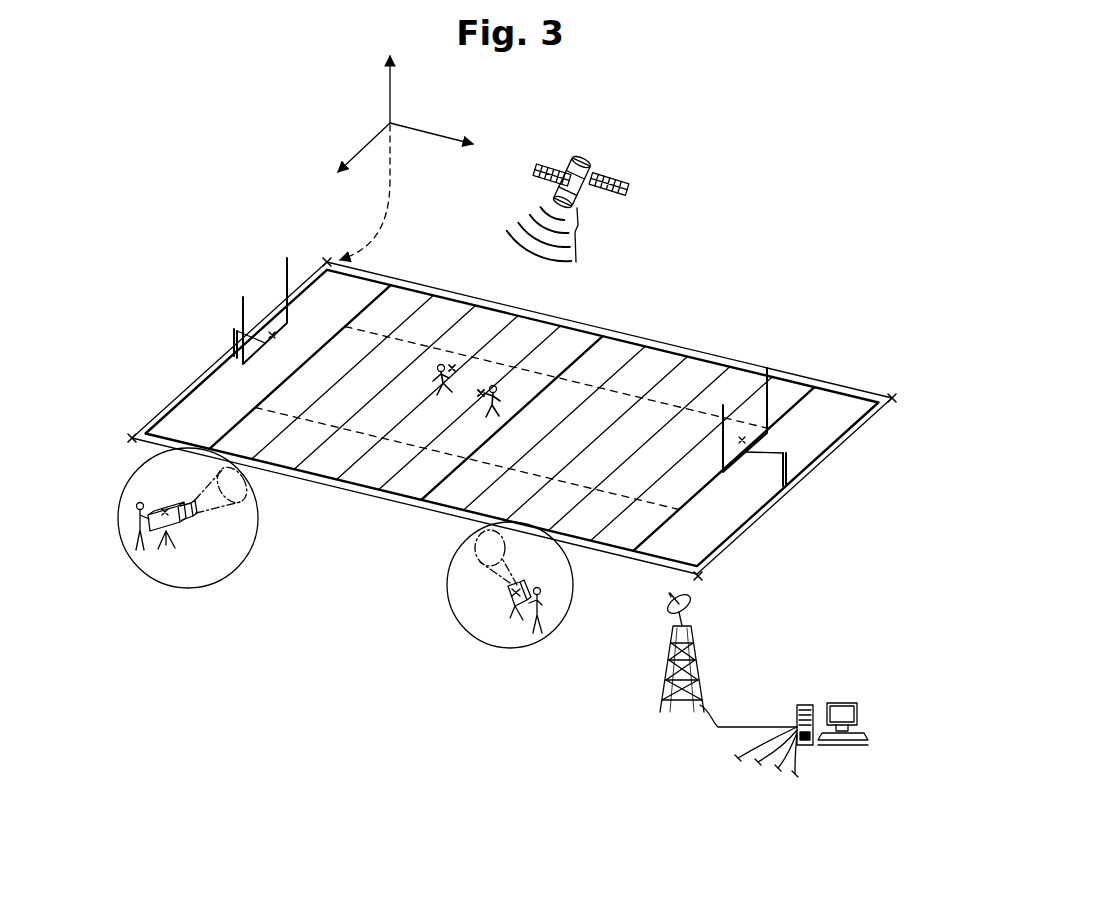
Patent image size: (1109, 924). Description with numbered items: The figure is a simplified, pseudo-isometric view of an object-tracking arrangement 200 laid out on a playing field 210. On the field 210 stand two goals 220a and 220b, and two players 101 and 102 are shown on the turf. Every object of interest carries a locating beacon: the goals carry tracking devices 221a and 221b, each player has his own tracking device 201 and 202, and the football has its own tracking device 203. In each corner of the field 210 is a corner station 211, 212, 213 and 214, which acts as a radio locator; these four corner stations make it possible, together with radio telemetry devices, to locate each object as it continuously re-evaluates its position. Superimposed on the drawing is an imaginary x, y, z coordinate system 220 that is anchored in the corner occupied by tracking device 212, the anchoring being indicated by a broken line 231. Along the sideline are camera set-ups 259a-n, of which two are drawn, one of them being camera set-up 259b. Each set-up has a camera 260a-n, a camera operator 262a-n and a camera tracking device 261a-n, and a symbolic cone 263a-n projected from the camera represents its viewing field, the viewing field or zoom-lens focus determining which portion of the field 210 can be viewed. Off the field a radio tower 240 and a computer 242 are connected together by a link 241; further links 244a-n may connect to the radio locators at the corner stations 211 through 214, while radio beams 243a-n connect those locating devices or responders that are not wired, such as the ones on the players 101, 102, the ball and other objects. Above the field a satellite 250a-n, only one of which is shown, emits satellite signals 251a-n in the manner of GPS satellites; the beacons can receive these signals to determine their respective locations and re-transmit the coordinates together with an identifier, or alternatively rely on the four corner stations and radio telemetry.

The player 101 is at (442, 365).
The player 102 is at (501, 403).
The tracking system 200 is at (786, 159).
The player tracking device 201 is at (453, 366).
The player tracking device 202 is at (484, 392).
The football tracking device 203 is at (480, 393).
The playing field 210 is at (740, 533).
The corner station 211 is at (130, 435).
The corner station 212 is at (325, 257).
The corner station 213 is at (891, 395).
The corner station 214 is at (703, 577).
The coordinate system 220 is at (425, 116).
The goal 220a is at (788, 453).
The goal 220b is at (236, 331).
The first goal post reference point 221a is at (744, 440).
The second goal post reference point 221b is at (270, 333).
The broken line 231 is at (378, 213).
The radio tower 240 is at (700, 672).
The link 241 is at (720, 730).
The computer 242 is at (838, 703).
The radio beams 243a-n is at (700, 605).
The links 244a-n is at (797, 765).
The satellite 250a-n is at (588, 165).
The satellite signals 251a-n is at (580, 228).
The camera set-ups 259a-n is at (473, 647).
The camera set-up 259b is at (223, 590).
The camera 260a-n is at (509, 604).
The camera tracking device 261a-n is at (509, 592).
The camera operator 262a-n is at (541, 618).
The viewing field cone 263a-n is at (476, 563).